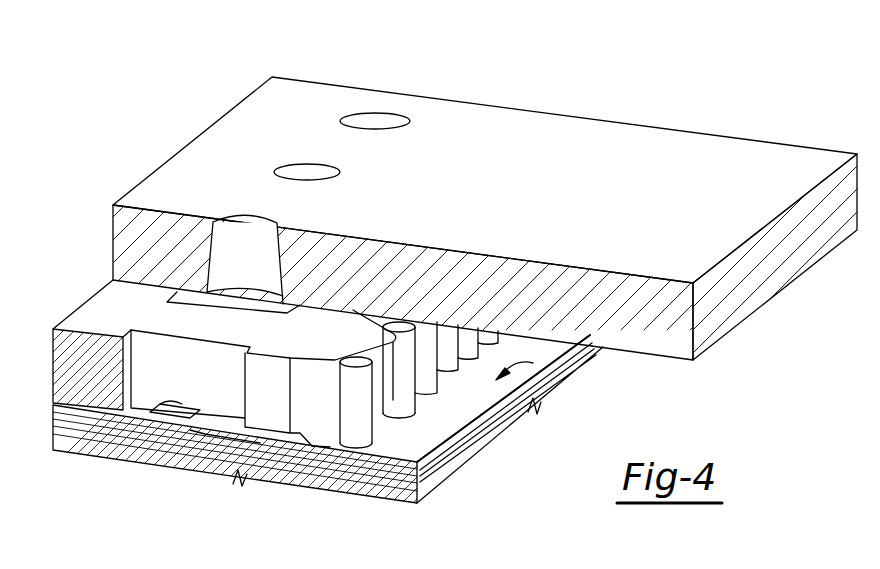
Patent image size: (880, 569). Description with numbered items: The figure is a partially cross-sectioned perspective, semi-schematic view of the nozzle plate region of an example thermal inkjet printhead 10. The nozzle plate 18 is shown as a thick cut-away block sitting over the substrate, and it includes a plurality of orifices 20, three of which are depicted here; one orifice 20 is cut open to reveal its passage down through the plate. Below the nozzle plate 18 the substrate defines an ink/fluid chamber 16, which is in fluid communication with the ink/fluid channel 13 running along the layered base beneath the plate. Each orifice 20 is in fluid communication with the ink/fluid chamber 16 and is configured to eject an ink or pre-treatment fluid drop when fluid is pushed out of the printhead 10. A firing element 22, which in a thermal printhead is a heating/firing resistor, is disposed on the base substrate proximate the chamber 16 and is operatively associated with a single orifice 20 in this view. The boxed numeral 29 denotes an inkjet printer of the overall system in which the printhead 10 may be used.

The inkjet printhead 10 is at (172, 74).
The ink/fluid channel 13 is at (543, 372).
The ink/fluid chamber 16 is at (122, 336).
The nozzle plate 18 is at (578, 132).
The orifice 20 is at (293, 170).
The firing element 22 is at (178, 416).
The inkjet printer 29 is at (201, 435).